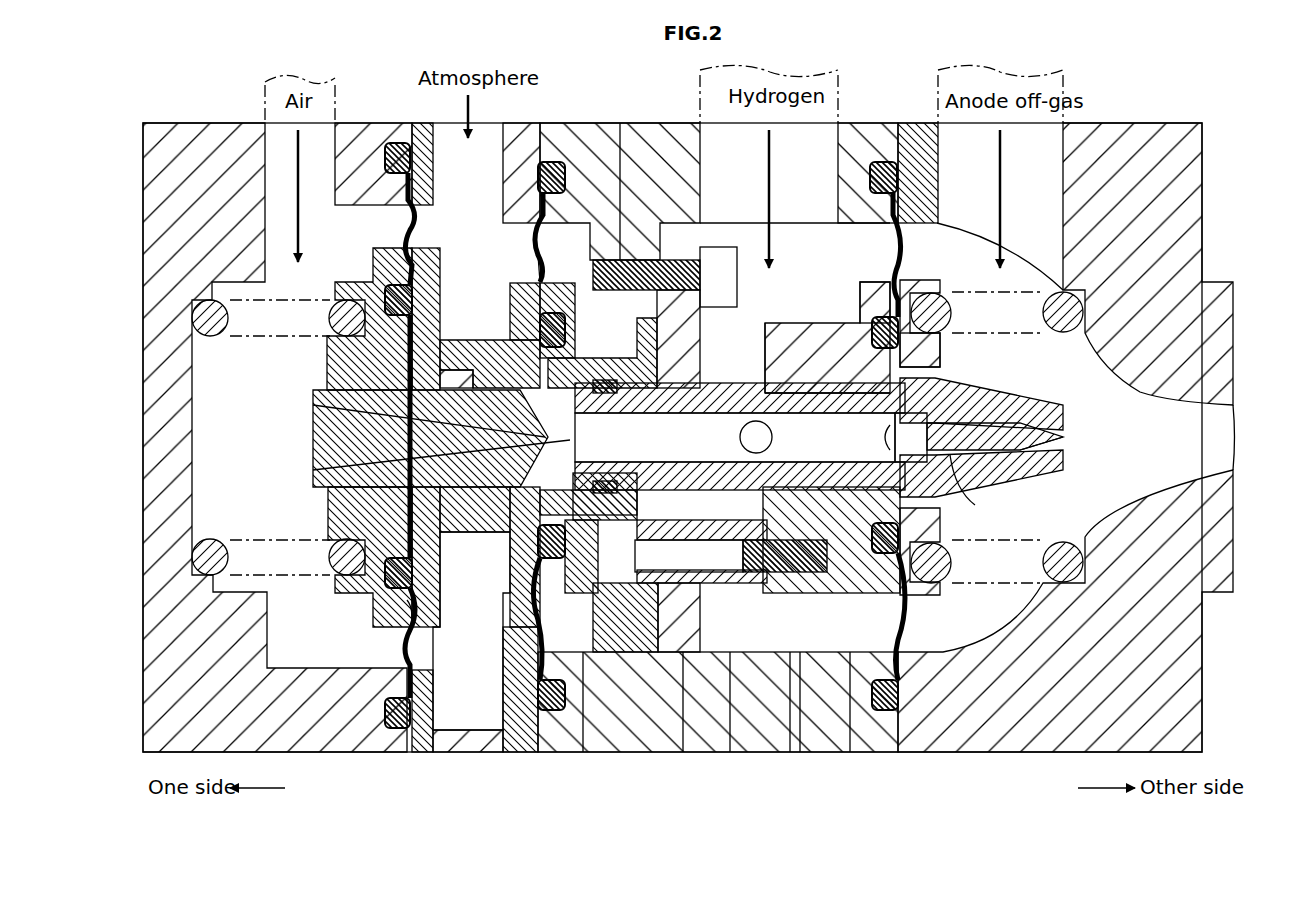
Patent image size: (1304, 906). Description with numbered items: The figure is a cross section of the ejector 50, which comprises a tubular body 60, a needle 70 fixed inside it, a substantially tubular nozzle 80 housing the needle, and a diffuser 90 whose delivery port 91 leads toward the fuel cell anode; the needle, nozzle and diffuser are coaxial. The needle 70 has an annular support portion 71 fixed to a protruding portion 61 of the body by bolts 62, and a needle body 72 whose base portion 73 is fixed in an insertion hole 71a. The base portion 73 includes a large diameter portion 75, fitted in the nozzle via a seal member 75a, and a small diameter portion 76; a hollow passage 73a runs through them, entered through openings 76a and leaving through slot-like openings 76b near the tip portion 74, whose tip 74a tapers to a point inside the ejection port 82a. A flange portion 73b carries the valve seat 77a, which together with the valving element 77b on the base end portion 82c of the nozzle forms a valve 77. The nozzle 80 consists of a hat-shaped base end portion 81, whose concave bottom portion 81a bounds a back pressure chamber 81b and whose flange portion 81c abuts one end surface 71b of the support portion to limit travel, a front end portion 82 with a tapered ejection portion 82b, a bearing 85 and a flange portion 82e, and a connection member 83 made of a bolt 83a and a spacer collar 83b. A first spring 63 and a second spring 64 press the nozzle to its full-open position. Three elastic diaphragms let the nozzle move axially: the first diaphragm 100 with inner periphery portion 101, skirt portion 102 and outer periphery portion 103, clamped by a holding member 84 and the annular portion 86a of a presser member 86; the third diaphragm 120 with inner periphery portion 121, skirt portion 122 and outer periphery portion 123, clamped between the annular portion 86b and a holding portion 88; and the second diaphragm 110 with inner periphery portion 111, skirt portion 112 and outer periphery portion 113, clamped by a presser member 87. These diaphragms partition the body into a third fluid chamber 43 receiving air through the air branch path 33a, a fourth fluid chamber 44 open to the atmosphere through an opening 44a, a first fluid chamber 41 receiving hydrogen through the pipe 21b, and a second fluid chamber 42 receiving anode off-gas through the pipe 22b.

The pipe 21b is at (840, 75).
The pipe 22b is at (1065, 75).
The air branch path 33a is at (262, 85).
The first fluid chamber 41 is at (836, 247).
The second fluid chamber 42 is at (1152, 447).
The third fluid chamber 43 is at (229, 434).
The fourth fluid chamber 44 is at (480, 297).
The opening 44a is at (480, 130).
The ejector 50 is at (1208, 162).
The body 60 is at (664, 122).
The protruding portion 61 is at (568, 200).
The bolt 62 is at (612, 235).
The first spring 63 is at (208, 545).
The second spring 64 is at (945, 572).
The needle 70 is at (752, 782).
The support portion 71 is at (715, 660).
The insertion hole 71a is at (670, 380).
The one end surface 71b is at (668, 413).
The needle body 72 is at (680, 640).
The base portion 73 is at (602, 600).
The passage 73a is at (622, 447).
The flange portion 73b is at (716, 380).
The tip portion 74 is at (985, 410).
The tip 74a is at (1040, 452).
The large diameter portion 75 is at (622, 385).
The seal member 75a is at (605, 380).
The small diameter portion 76 is at (898, 425).
The opening 76a is at (770, 440).
The slot-like opening 76b is at (975, 505).
The valve 77 is at (842, 297).
The valve seat 77a is at (755, 340).
The valving element 77b is at (800, 385).
The nozzle 80 is at (803, 598).
The base end portion 81 is at (572, 500).
The bottom portion 81a is at (313, 405).
The back pressure chamber 81b is at (313, 455).
The flange portion 81c is at (605, 275).
The front end portion 82 is at (1022, 385).
The ejection port 82a is at (1066, 458).
The ejection portion 82b is at (1066, 417).
The base end portion 82c is at (860, 585).
The flange portion 82e is at (872, 285).
The connection member 83 is at (878, 782).
The bolt 83a is at (770, 660).
The collar 83b is at (835, 660).
The holding member 84 is at (550, 590).
The bearing 85 is at (835, 548).
The presser member 86 is at (470, 540).
The annular portion 86a is at (520, 590).
The annular portion 86b is at (418, 628).
The presser member 87 is at (938, 290).
The holding portion 88 is at (352, 598).
The diffuser 90 is at (1178, 120).
The delivery port 91 is at (1215, 437).
The first diaphragm 100 is at (522, 245).
The inner periphery portion 101 is at (548, 322).
The skirt portion 102 is at (530, 255).
The outer periphery portion 103 is at (545, 172).
The second diaphragm 110 is at (908, 250).
The inner periphery portion 111 is at (905, 340).
The skirt portion 112 is at (905, 270).
The outer periphery portion 113 is at (900, 170).
The third diaphragm 120 is at (428, 222).
The inner periphery portion 121 is at (385, 330).
The skirt portion 122 is at (410, 232).
The outer periphery portion 123 is at (395, 142).